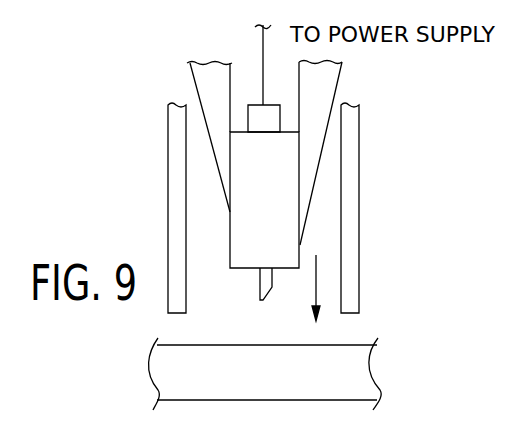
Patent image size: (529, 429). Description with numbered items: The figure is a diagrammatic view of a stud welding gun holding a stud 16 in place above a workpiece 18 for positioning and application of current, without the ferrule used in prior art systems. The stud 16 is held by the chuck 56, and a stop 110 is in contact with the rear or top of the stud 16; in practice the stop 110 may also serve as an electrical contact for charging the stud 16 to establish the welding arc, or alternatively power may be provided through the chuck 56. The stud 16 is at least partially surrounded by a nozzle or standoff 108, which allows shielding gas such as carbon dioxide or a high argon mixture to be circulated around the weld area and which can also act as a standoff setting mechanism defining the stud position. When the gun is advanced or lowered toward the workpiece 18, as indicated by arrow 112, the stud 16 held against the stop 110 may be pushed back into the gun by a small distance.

The chuck 56 is at (206, 74).
The stud 16 is at (300, 240).
The stop 110 is at (265, 118).
The nozzle or standoff 108 is at (177, 213).
The arrow 112 is at (318, 283).
The workpiece 18 is at (275, 387).